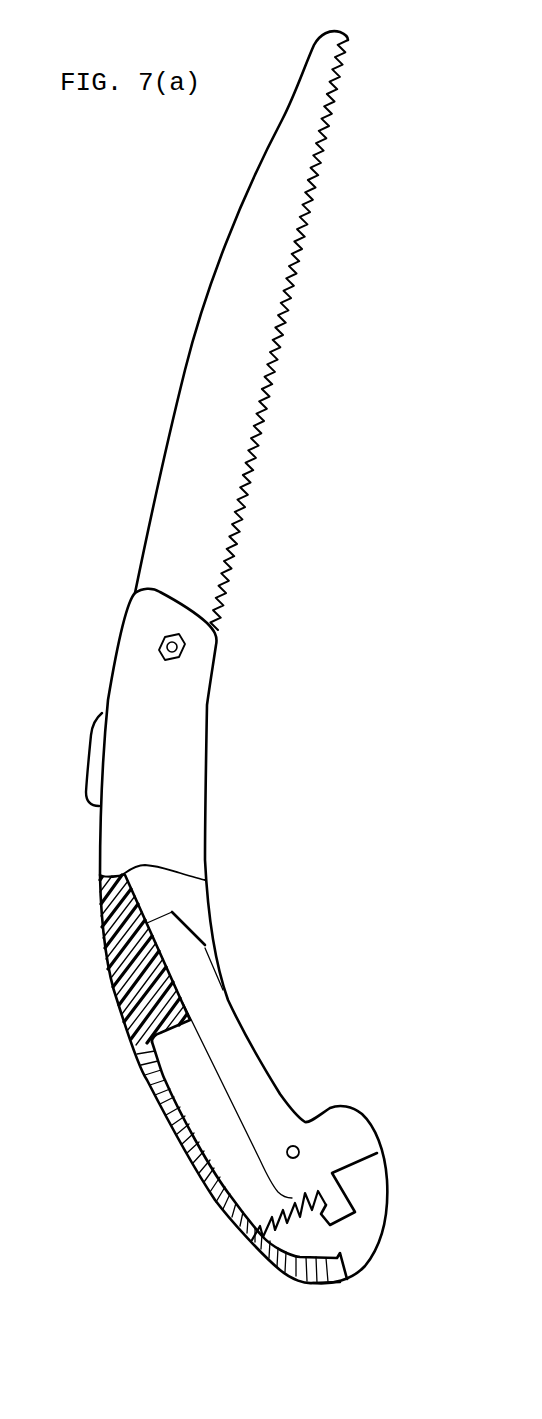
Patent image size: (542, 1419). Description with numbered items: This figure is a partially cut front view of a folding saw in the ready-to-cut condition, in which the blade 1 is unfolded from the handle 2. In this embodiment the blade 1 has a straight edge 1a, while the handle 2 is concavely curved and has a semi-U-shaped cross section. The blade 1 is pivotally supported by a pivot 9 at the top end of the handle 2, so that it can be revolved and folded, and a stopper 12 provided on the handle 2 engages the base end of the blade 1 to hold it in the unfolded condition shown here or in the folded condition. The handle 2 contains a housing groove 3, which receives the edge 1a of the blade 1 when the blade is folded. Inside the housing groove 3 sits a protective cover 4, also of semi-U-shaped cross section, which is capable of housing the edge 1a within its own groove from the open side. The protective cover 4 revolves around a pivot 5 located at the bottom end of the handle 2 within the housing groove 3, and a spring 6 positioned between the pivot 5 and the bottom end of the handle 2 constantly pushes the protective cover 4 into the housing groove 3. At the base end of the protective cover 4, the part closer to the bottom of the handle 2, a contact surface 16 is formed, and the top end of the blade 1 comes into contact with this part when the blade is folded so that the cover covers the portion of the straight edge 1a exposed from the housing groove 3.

The blade 1 is at (222, 368).
The edge 1a is at (292, 300).
The handle 2 is at (172, 730).
The housing groove 3 is at (190, 902).
The protective cover 4 is at (235, 1072).
The pivot 5 is at (297, 1143).
The spring 6 is at (263, 1215).
The pivot 9 is at (160, 640).
The stopper 12 is at (92, 762).
The contact surface 16 is at (345, 1190).